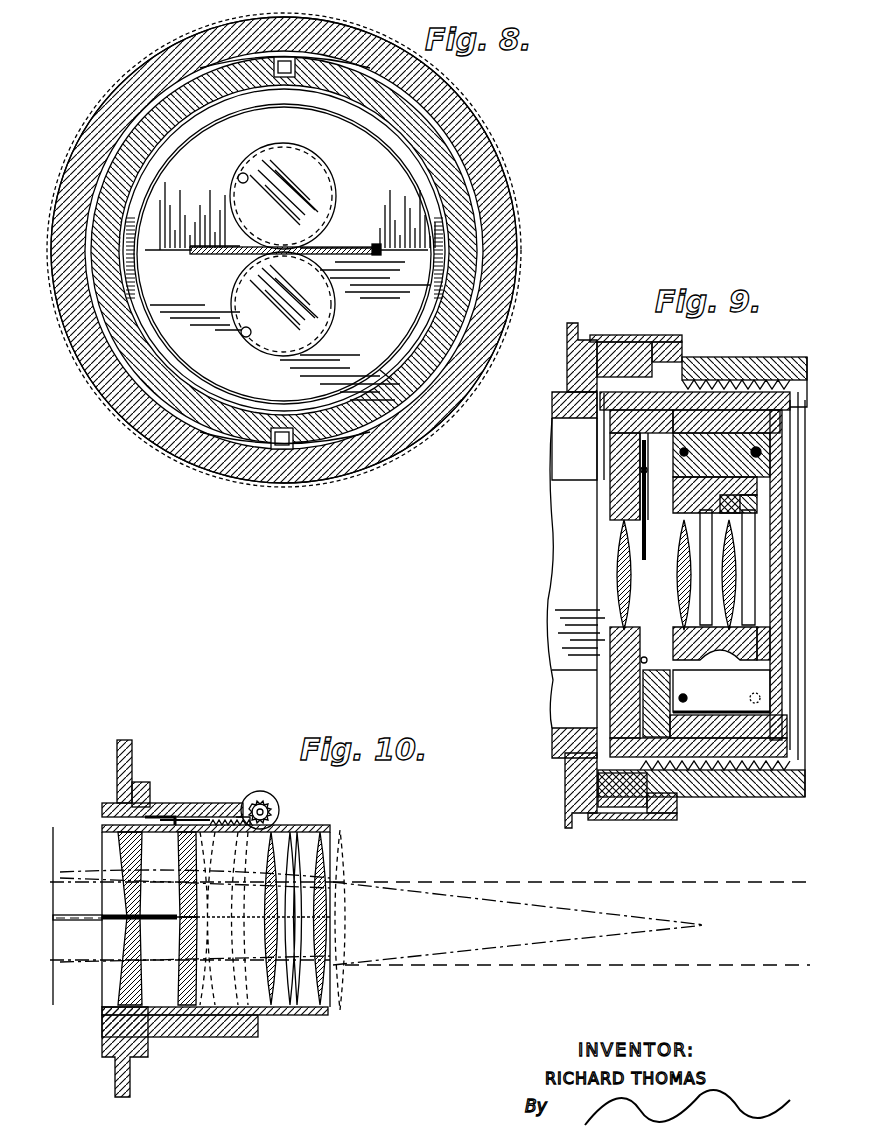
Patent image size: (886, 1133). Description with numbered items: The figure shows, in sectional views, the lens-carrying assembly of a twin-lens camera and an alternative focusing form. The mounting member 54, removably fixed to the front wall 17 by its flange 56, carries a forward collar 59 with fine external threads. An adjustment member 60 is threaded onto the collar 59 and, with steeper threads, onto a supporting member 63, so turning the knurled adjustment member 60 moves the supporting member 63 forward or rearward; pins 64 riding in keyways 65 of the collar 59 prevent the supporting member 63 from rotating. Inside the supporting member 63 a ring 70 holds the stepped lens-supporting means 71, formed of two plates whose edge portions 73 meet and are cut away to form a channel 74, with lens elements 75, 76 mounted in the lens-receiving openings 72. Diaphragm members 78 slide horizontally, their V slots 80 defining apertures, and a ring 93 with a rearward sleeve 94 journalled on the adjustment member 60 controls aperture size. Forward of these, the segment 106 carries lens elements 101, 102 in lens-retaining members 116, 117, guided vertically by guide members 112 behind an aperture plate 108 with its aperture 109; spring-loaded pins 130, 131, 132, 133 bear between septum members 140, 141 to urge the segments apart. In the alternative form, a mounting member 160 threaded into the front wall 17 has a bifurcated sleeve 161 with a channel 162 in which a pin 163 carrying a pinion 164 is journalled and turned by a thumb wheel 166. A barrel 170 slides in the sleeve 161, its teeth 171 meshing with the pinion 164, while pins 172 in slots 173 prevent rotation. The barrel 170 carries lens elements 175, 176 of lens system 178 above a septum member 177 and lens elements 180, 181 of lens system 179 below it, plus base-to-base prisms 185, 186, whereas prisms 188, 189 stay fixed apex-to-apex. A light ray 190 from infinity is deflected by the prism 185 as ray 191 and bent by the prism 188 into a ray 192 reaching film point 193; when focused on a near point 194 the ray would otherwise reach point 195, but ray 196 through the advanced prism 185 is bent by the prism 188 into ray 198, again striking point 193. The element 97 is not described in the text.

In FIG. 10, the front wall 17 is at (132, 757).
In FIG. 9, the mounting member 54 is at (570, 421).
In FIG. 9, the flange 56 is at (566, 826).
In FIG. 8, the collar 59 is at (108, 162).
In FIG. 9, the collar 59 is at (607, 385).
In FIG. 8, the adjustment member 60 is at (104, 113).
In FIG. 9, the adjustment member 60 is at (757, 366).
In FIG. 8, the supporting member 63 is at (362, 438).
In FIG. 9, the supporting member 63 is at (727, 395).
In FIG. 8, the pins 64 is at (298, 64).
In FIG. 8, the keyways 65 is at (284, 56).
In FIG. 8, the ring 70 is at (388, 378).
In FIG. 9, the ring 70 is at (612, 724).
In FIG. 8, the lens-supporting means 71 is at (385, 330).
In FIG. 9, the lens-supporting means 71 is at (612, 465).
In FIG. 8, the lens-receiving openings 72 is at (240, 178).
In FIG. 8, the edge portions 73 is at (168, 255).
In FIG. 8, the channel 74 is at (352, 247).
In FIG. 8, the lens element 75 is at (310, 188).
In FIG. 9, the lens element 75 is at (616, 574).
In FIG. 8, the lens element 76 is at (316, 300).
In FIG. 9, the diaphragm members 78 is at (654, 548).
In FIG. 9, the V slot 80 is at (640, 556).
In FIG. 9, the ring 93 is at (684, 338).
In FIG. 8, the sleeve 94 is at (113, 87).
In FIG. 9, the sleeve 94 is at (628, 334).
In FIG. 10, the axis plate 97 is at (176, 862).
In FIG. 9, the lens element 101 is at (692, 566).
In FIG. 9, the lens element 102 is at (737, 588).
In FIG. 9, the segment 106 is at (785, 434).
In FIG. 9, the aperture plate 108 is at (766, 656).
In FIG. 9, the aperture 109 is at (776, 627).
In FIG. 9, the guide members 112 is at (790, 773).
In FIG. 9, the lens-retaining member 116 is at (752, 493).
In FIG. 9, the lens-retaining member 117 is at (757, 503).
In FIG. 9, the pin 130 is at (784, 452).
In FIG. 9, the pin 131 is at (704, 451).
In FIG. 9, the pin 132 is at (786, 699).
In FIG. 9, the pin 133 is at (728, 704).
In FIG. 8, the septum member 140 is at (216, 256).
In FIG. 8, the septum member 141 is at (203, 245).
In FIG. 10, the mounting member 160 is at (150, 783).
In FIG. 10, the sleeve 161 is at (222, 800).
In FIG. 10, the channel 162 is at (244, 800).
In FIG. 10, the pin 163 is at (270, 809).
In FIG. 10, the pinion 164 is at (275, 826).
In FIG. 10, the thumb wheel 166 is at (276, 798).
In FIG. 10, the barrel 170 is at (352, 832).
In FIG. 10, the teeth 171 is at (215, 803).
In FIG. 10, the pins 172 is at (185, 803).
In FIG. 10, the slots 173 is at (235, 803).
In FIG. 10, the lens element 175 is at (330, 853).
In FIG. 10, the lens element 176 is at (266, 855).
In FIG. 10, the septum member 177 is at (232, 918).
In FIG. 10, the lens system 178 is at (364, 872).
In FIG. 10, the lens system 179 is at (368, 950).
In FIG. 10, the lens element 180 is at (330, 985).
In FIG. 10, the lens element 181 is at (266, 988).
In FIG. 10, the prism 185 is at (180, 850).
In FIG. 10, the prism 186 is at (182, 942).
In FIG. 10, the prism 188 is at (120, 847).
In FIG. 10, the prism 189 is at (120, 990).
In FIG. 10, the light ray 190 is at (430, 909).
In FIG. 10, the deflected ray 191 is at (155, 900).
In FIG. 10, the ray 192 is at (98, 897).
In FIG. 10, the point 193 is at (45, 916).
In FIG. 10, the point 194 is at (538, 923).
In FIG. 10, the point 195 is at (53, 870).
In FIG. 10, the ray 196 is at (508, 905).
In FIG. 10, the ray 198 is at (115, 870).